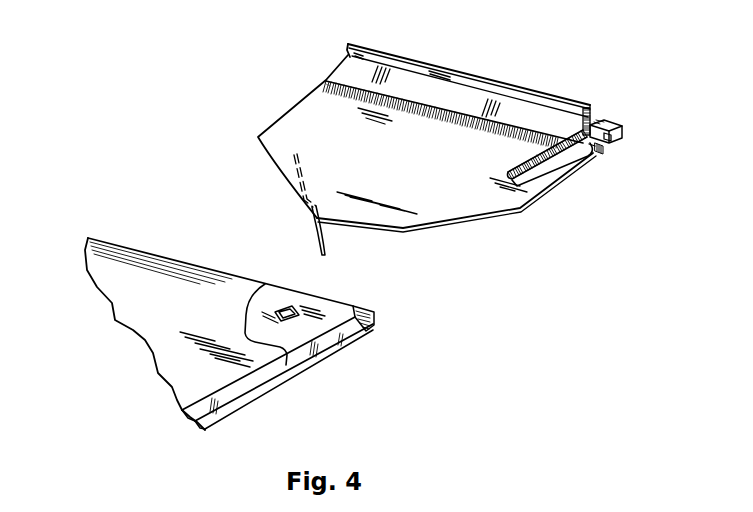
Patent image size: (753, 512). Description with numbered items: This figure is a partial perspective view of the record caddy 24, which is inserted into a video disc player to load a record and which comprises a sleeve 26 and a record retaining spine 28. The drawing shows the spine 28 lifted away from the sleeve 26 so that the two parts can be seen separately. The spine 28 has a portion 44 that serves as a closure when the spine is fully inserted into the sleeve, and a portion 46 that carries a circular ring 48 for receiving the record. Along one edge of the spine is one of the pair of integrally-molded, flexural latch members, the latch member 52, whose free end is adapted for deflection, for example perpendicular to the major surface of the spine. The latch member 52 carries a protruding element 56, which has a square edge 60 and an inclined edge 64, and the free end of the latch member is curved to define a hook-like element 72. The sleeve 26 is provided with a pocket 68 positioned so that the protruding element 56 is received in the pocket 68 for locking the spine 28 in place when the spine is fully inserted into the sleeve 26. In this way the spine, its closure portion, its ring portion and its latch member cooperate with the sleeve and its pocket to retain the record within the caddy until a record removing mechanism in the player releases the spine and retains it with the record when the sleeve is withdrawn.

The record caddy 24 is at (74, 277).
The sleeve 26 is at (271, 380).
The record retaining spine 28 is at (463, 207).
The closure portion 44 is at (497, 86).
The ring-bearing portion 46 is at (328, 99).
The circular ring 48 is at (325, 238).
The flexural latch member 52 is at (620, 133).
The protruding element 56 is at (610, 155).
The square edge 60 is at (606, 147).
The inclined edge 64 is at (601, 158).
The pocket 68 is at (286, 306).
The hook-like element 72 is at (614, 141).